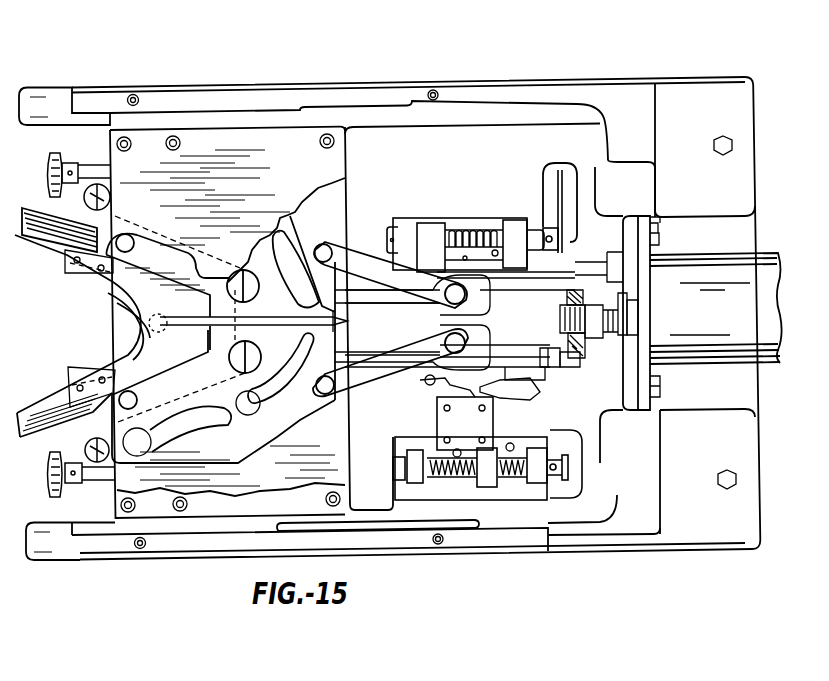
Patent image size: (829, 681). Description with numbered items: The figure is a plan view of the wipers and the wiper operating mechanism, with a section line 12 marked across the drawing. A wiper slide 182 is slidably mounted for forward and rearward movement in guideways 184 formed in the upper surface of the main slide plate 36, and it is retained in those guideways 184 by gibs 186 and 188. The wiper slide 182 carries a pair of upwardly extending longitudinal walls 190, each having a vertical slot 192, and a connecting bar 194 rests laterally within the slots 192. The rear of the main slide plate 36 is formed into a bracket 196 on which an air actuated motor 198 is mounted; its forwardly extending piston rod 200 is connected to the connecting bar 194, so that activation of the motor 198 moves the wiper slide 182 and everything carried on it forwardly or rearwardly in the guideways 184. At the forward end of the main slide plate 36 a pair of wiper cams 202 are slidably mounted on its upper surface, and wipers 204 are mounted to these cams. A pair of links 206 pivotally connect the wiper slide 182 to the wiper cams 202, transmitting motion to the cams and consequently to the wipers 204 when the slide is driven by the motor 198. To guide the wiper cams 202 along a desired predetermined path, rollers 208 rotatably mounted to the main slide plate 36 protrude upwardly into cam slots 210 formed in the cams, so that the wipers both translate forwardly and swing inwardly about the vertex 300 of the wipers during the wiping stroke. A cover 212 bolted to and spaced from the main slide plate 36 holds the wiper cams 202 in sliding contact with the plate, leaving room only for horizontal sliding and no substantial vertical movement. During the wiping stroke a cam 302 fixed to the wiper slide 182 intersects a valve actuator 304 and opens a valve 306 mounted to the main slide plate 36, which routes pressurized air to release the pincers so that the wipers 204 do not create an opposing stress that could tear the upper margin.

The section line 12- 12 is at (296, 21).
The main slide plate 36 is at (456, 170).
The wiper slide 182 is at (508, 331).
The guideways 184 is at (353, 281).
The gib 186 is at (495, 265).
The gib 188 is at (515, 387).
The longitudinal walls 190 is at (532, 353).
The vertical slot 192 is at (575, 355).
The connecting bar 194 is at (566, 340).
The bracket 196 is at (660, 217).
The air actuated motor 198 is at (742, 319).
The piston rod 200 is at (615, 320).
The wiper cams 202 is at (268, 321).
The wipers 204 is at (150, 318).
The links 206 is at (343, 247).
The rollers 208 is at (152, 450).
The cam slots 210 is at (168, 423).
The cover 212 is at (292, 180).
The vertex 300 is at (160, 327).
The cam 302 is at (490, 396).
The valve actuator 304 is at (470, 397).
The valve 306 is at (435, 408).